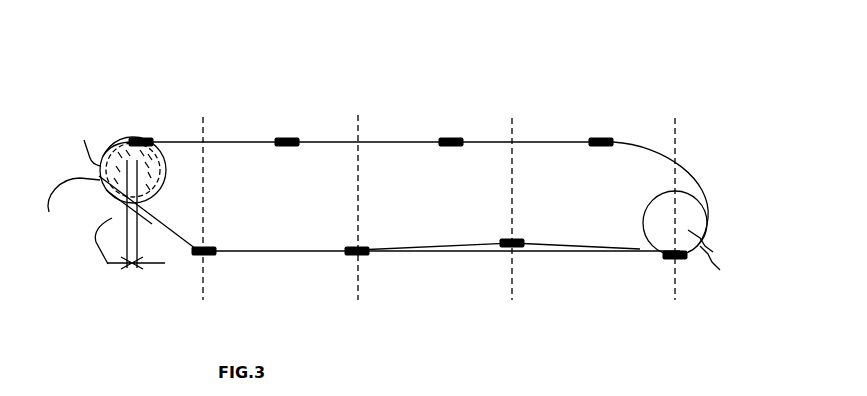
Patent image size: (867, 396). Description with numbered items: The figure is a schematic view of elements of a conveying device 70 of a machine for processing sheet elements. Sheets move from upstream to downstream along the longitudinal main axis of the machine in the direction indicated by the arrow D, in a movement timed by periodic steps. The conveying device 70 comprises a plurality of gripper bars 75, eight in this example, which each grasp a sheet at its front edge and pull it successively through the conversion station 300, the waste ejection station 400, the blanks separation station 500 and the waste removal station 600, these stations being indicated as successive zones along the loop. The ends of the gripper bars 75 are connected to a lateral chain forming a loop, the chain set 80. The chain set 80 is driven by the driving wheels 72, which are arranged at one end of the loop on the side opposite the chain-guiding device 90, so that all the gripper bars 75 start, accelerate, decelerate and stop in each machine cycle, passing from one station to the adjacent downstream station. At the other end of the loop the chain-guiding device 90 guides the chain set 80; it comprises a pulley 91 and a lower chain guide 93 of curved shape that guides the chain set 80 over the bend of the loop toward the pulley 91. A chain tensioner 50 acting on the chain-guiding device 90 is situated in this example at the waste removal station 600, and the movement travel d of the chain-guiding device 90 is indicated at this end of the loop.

The conveying device 70 is at (729, 136).
The driving wheels 72 is at (700, 243).
The gripper bars 75 is at (155, 125).
The chain set 80 is at (226, 132).
The chain-guiding device 90 is at (118, 117).
The pulley 91 is at (80, 141).
The lower chain guide 93 is at (121, 222).
The chain tensioner 50 is at (68, 210).
The waste removal station 600 is at (163, 298).
The blanks separation station 500 is at (283, 297).
The waste ejection station 400 is at (447, 291).
The conversion station 300 is at (597, 286).
The direction of movement of the sheet elements D is at (335, 203).
The movement travel d is at (129, 290).